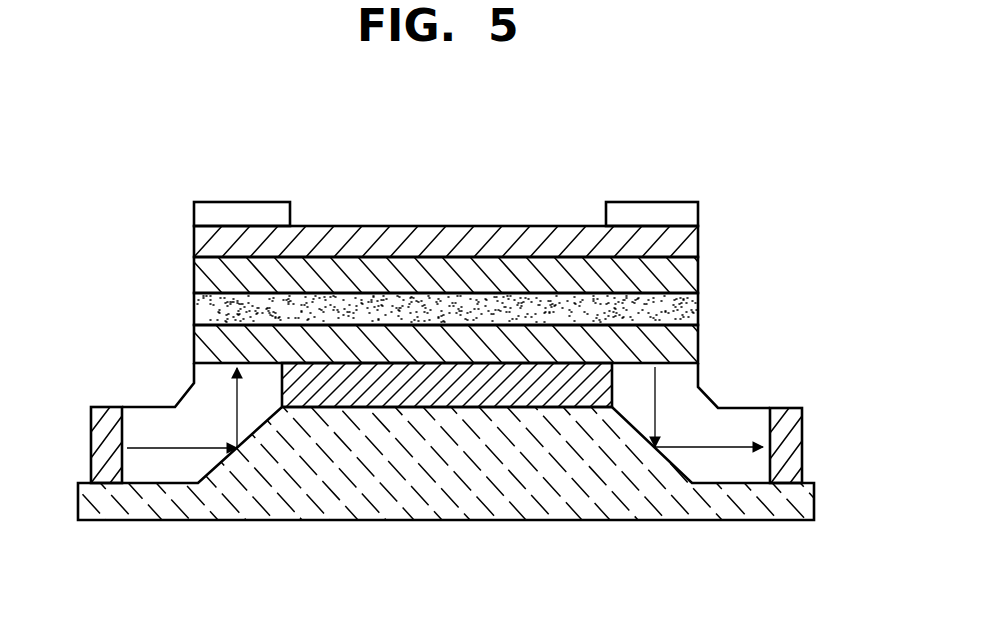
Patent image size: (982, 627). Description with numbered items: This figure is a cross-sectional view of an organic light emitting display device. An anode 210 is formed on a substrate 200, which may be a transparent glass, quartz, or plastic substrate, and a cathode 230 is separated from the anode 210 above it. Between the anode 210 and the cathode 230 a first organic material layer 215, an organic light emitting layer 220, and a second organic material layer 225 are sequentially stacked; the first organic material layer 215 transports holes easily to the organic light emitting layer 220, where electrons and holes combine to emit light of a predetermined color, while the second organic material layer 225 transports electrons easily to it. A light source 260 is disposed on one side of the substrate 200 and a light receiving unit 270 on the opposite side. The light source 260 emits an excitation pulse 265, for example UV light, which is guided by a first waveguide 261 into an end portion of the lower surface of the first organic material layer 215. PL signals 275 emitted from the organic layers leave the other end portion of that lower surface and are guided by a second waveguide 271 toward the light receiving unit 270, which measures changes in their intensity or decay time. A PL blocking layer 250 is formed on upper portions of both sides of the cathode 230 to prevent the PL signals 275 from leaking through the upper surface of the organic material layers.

The substrate 200 is at (378, 502).
The anode 210 is at (468, 395).
The first organic material layer 215 is at (700, 342).
The organic light emitting layer 220 is at (700, 308).
The second organic material layer 225 is at (700, 275).
The cathode 230 is at (700, 240).
The PL blocking layer 250 is at (243, 207).
The light source 260 is at (97, 449).
The first waveguide 261 is at (150, 404).
The excitation pulse 265 is at (170, 448).
The light receiving unit 270 is at (803, 445).
The second waveguide 271 is at (760, 404).
The PL signals 275 is at (718, 448).